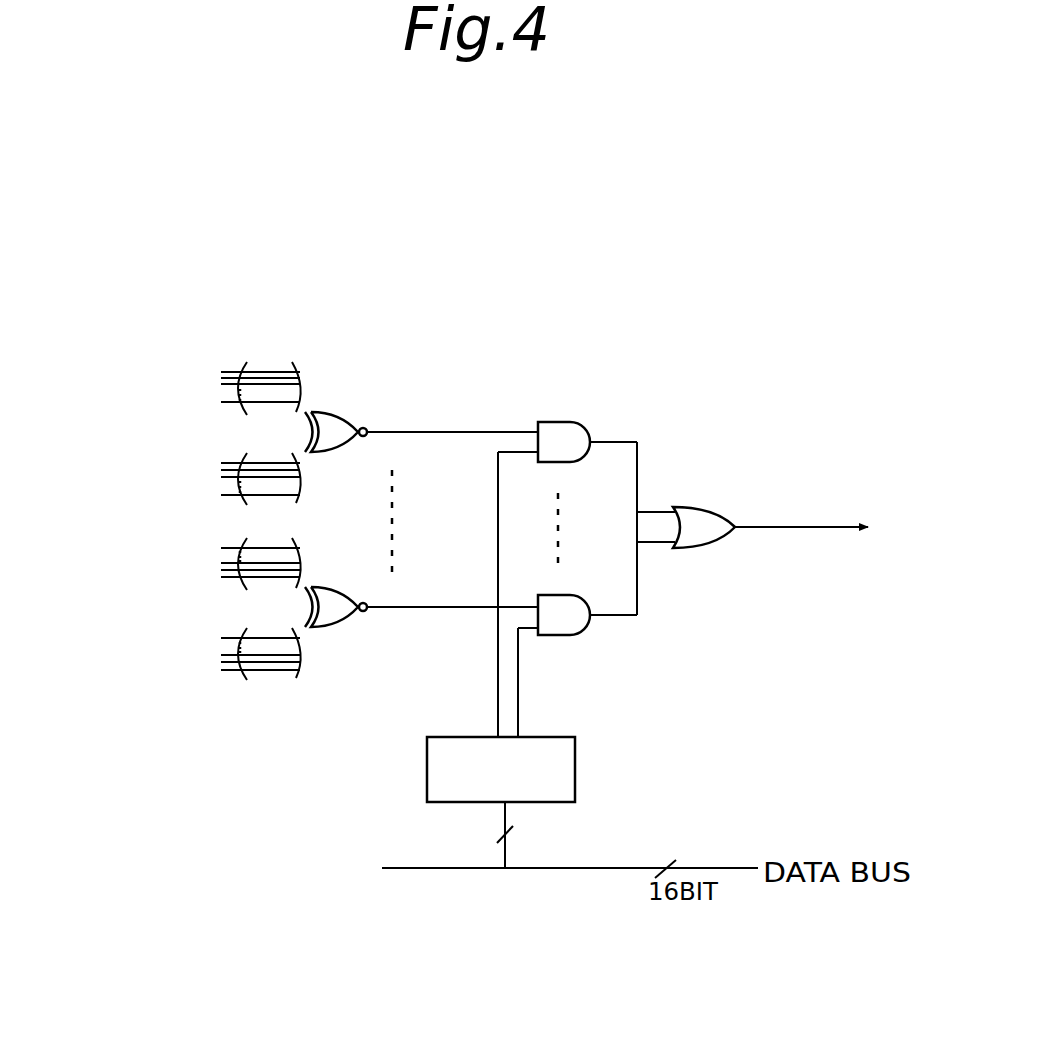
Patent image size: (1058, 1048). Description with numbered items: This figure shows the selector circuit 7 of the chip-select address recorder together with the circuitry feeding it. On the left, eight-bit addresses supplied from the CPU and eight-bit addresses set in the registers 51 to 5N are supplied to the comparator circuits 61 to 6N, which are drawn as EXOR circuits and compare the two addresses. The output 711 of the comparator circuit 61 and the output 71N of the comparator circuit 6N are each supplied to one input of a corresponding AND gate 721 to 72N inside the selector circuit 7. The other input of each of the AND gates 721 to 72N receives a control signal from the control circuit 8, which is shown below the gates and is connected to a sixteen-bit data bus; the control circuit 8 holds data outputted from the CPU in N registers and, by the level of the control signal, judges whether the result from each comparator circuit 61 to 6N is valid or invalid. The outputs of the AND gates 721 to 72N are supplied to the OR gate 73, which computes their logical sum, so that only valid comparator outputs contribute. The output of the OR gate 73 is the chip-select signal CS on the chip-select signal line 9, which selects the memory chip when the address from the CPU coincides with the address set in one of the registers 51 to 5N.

The register 51 is at (174, 432).
The register 5N is at (171, 628).
The comparator circuit 61 is at (333, 411).
The comparator circuit 6N is at (395, 651).
The output of comparator circuit 711 is at (425, 430).
The output of comparator circuit 71N is at (430, 605).
The selector circuit 7 is at (752, 437).
The AND gate 721 is at (591, 421).
The AND gate 72N is at (583, 632).
The OR gate 73 is at (700, 507).
The chip-select signal line 9 is at (818, 527).
The control circuit 8 is at (575, 760).